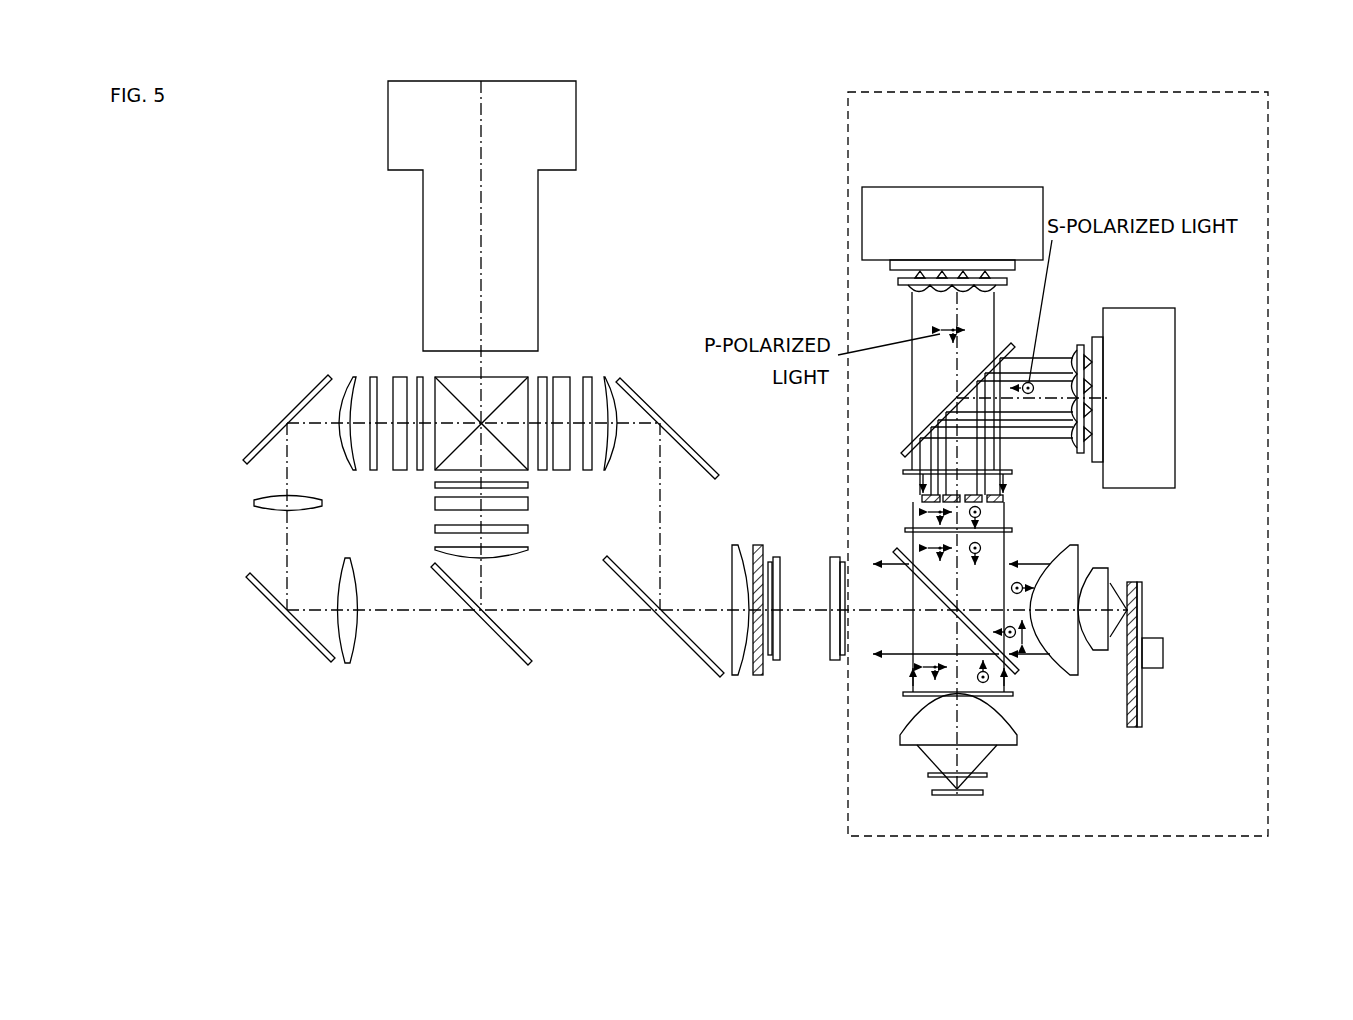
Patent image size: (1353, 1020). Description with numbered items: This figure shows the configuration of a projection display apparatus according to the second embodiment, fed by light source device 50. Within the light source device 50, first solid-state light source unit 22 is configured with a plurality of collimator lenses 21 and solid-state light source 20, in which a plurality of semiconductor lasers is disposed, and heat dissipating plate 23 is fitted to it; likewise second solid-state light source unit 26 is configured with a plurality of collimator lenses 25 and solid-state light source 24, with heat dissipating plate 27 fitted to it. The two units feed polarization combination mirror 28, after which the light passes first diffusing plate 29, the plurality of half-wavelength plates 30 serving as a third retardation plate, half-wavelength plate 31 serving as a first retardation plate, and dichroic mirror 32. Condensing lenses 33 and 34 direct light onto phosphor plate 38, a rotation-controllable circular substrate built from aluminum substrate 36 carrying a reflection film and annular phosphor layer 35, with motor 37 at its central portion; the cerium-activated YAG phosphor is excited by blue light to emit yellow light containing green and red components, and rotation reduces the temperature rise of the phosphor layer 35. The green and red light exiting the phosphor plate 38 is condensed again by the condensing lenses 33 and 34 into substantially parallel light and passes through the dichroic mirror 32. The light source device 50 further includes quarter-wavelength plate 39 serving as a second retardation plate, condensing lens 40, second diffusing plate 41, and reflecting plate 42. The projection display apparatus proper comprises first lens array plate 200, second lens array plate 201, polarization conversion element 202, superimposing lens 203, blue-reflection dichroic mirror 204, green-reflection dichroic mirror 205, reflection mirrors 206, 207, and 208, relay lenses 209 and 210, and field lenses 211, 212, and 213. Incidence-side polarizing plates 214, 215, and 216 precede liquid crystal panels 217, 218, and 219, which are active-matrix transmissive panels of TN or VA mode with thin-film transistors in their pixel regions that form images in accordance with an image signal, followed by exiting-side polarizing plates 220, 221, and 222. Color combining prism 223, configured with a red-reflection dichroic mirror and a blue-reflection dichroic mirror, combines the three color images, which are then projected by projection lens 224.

The solid-state light source 20 is at (1098, 374).
The collimator lenses 21 is at (1080, 345).
The first solid-state light source unit 22 is at (1084, 357).
The heat dissipating plate 23 is at (1156, 307).
The solid-state light source 24 is at (890, 266).
The collimator lenses 25 is at (898, 282).
The second solid-state light source unit 26 is at (889, 276).
The heat dissipating plate 27 is at (978, 187).
The polarization combination mirror 28 is at (903, 447).
The first diffusing plate 29 is at (903, 471).
The half-wavelength plates 30 is at (921, 498).
The half-wavelength plate 31 is at (1013, 528).
The dichroic mirror 32 is at (895, 550).
The condensing lens 33 is at (1078, 551).
The condensing lens 34 is at (1109, 572).
The phosphor layer 35 is at (1129, 728).
The aluminum substrate 36 is at (1155, 677).
The motor 37 is at (1163, 660).
The phosphor plate 38 is at (1145, 701).
The quarter-wavelength plate 39 is at (903, 694).
The condensing lens 40 is at (900, 742).
The second diffusing plate 41 is at (928, 775).
The reflecting plate 42 is at (932, 792).
The light source device 50 is at (847, 143).
The first lens array plate 200 is at (833, 661).
The second lens array plate 201 is at (776, 661).
The polarization conversion element 202 is at (758, 677).
The superimposing lens 203 is at (733, 673).
The blue-reflection dichroic mirror 204 is at (673, 633).
The green-reflection dichroic mirror 205 is at (498, 636).
The reflection mirror 206 is at (645, 396).
The reflection mirror 207 is at (272, 606).
The reflection mirror 208 is at (272, 433).
The relay lens 209 is at (357, 642).
The relay lens 210 is at (264, 511).
The field lens 211 is at (520, 555).
The field lens 212 is at (615, 462).
The field lens 213 is at (353, 376).
The incidence-side polarizing plate 214 is at (529, 531).
The incidence-side polarizing plate 215 is at (592, 376).
The incidence-side polarizing plate 216 is at (374, 376).
The liquid crystal panel 217 is at (433, 507).
The liquid crystal panel 218 is at (563, 376).
The liquid crystal panel 219 is at (399, 376).
The exiting-side polarizing plate 220 is at (433, 485).
The exiting-side polarizing plate 221 is at (545, 471).
The exiting-side polarizing plate 222 is at (412, 376).
The color combining prism 223 is at (520, 378).
The projection lens 224 is at (423, 195).